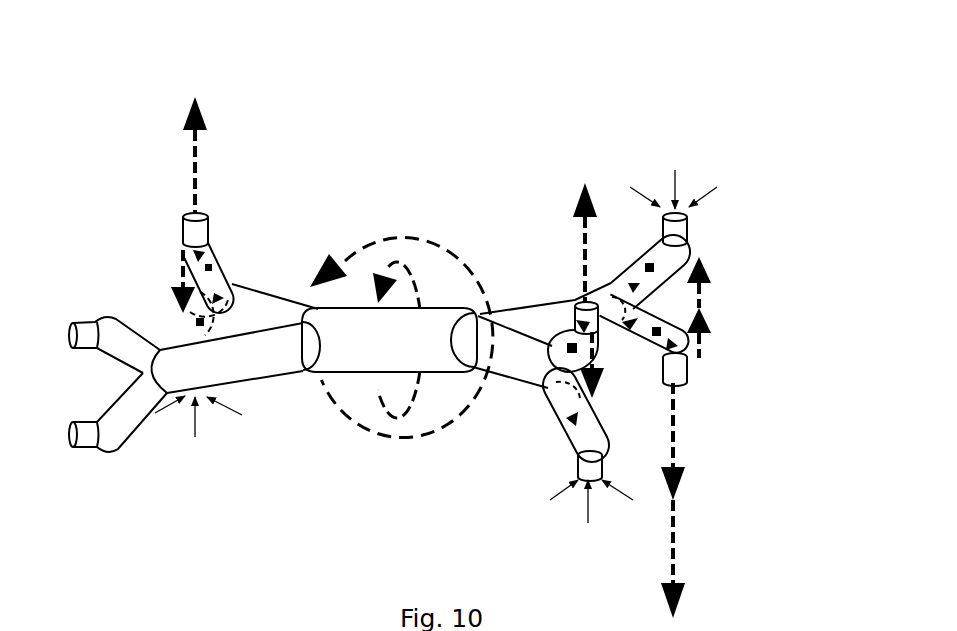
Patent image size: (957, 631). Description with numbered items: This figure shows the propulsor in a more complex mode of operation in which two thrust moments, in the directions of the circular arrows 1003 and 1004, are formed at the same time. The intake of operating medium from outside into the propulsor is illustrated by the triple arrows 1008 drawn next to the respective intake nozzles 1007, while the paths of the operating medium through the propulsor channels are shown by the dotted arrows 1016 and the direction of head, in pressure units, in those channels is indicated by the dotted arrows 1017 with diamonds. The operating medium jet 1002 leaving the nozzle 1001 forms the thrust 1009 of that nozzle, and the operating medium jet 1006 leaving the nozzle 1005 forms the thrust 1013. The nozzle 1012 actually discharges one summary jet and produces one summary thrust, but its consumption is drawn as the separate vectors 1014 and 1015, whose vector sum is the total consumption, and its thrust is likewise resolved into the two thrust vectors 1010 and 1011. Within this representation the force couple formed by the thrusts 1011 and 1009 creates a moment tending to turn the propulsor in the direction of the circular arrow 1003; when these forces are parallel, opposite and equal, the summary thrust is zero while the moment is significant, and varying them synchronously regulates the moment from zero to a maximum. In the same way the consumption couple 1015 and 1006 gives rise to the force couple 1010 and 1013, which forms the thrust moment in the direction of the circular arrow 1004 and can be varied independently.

The nozzle 1001 is at (185, 218).
The operating medium jet 1002 is at (183, 115).
The circular arrow 1003 is at (330, 262).
The circular arrow 1004 is at (385, 262).
The nozzle 1005 is at (575, 303).
The operating medium jet 1006 is at (583, 215).
The nozzle 1007 is at (658, 210).
The triple arrows 1008 is at (675, 187).
The thrust 1009 is at (174, 285).
The thrust vector 1010 is at (708, 273).
The thrust vector 1011 is at (708, 323).
The nozzle 1012 is at (686, 373).
The thrust 1013 is at (600, 384).
The consumption vector 1014 is at (678, 446).
The consumption vector 1015 is at (678, 562).
The dotted arrows 1016 is at (550, 403).
The dotted arrows with diamonds 1017 is at (550, 500).